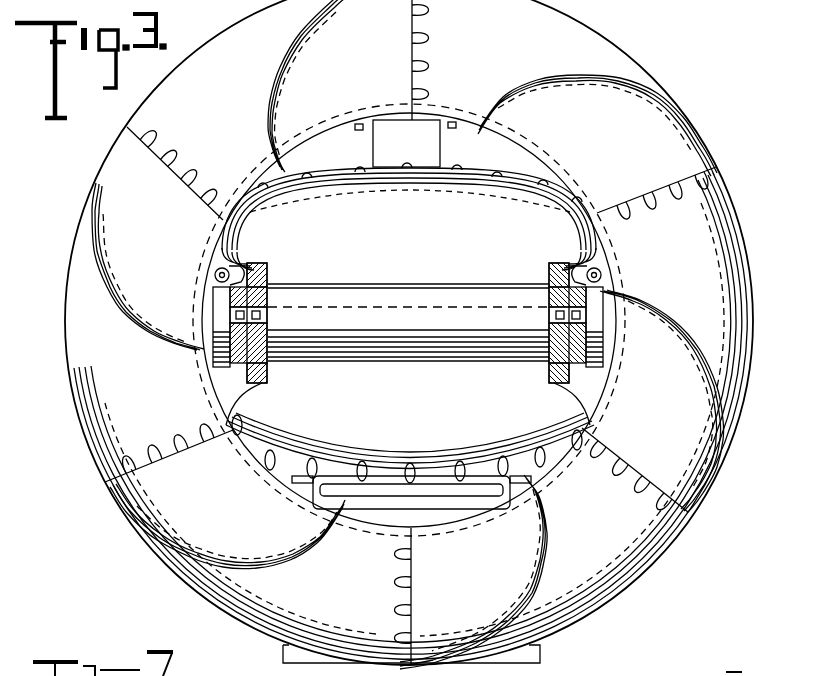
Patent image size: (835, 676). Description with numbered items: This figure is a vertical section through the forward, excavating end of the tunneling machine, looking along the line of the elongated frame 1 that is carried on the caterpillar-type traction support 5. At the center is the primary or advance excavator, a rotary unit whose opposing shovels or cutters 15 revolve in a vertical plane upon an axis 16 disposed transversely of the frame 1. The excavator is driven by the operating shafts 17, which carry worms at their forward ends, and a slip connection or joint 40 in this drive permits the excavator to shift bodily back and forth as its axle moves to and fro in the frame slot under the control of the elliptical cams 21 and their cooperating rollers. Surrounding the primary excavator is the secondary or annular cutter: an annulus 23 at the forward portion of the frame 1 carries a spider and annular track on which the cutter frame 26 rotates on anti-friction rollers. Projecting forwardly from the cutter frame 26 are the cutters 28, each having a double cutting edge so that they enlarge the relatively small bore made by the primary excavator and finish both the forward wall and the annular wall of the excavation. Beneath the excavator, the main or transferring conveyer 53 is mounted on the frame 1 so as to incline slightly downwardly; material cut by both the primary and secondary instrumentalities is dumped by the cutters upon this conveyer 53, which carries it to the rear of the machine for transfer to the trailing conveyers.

The elongated frame 1 is at (232, 298).
The traction support 5 is at (283, 648).
The opposing shovels or cutters 15 is at (409, 320).
The axis 16 is at (394, 330).
The operating shafts 17 is at (220, 273).
The elliptical cams 21 is at (262, 370).
The annulus 23 is at (272, 172).
The cutter frame 26 is at (93, 320).
The cutters 28 is at (393, 80).
The slip connection or joint 40 is at (233, 263).
The main conveyer 53 is at (432, 496).